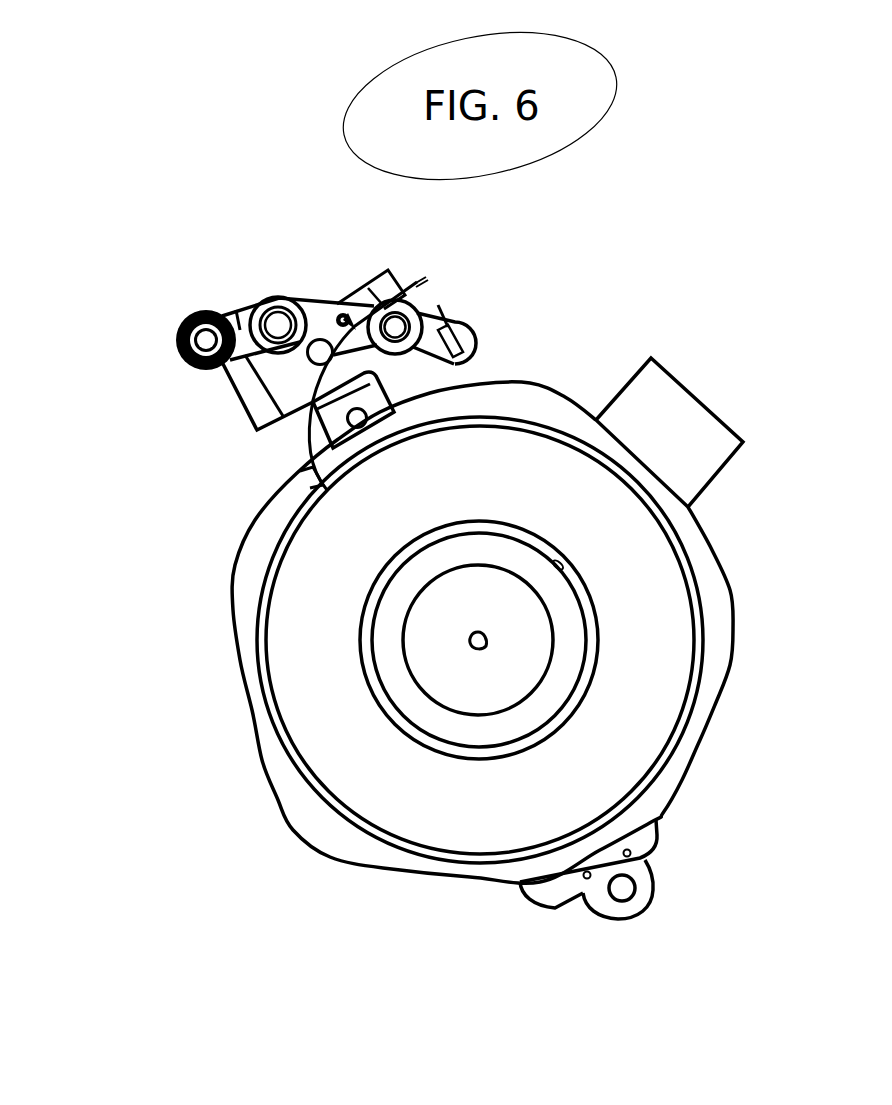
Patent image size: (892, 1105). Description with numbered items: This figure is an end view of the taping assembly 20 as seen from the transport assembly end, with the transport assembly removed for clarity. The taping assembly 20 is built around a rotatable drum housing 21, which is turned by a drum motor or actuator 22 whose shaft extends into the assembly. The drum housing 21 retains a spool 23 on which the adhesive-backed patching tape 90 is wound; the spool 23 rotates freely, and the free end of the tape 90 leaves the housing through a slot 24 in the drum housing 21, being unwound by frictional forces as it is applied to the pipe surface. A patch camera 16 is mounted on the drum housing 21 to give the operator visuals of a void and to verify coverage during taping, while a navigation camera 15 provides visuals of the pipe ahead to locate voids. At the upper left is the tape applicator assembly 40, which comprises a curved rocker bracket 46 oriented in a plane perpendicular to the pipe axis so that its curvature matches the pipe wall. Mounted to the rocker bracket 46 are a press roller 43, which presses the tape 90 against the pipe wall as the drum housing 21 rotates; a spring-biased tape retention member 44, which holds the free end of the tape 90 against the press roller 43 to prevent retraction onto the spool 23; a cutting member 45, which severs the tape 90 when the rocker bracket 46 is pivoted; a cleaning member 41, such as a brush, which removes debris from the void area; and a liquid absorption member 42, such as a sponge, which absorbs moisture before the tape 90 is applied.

The navigation camera 15 is at (625, 905).
The patch camera 16 is at (690, 422).
The taping assembly 20 is at (340, 912).
The drum housing 21 is at (262, 762).
The drum motor or actuator 22 is at (520, 617).
The spool 23 is at (573, 637).
The slot 24 is at (297, 473).
The tape applicator assembly 40 is at (180, 410).
The cleaning member 41 is at (176, 338).
The liquid absorption member 42 is at (263, 298).
The press roller 43 is at (405, 365).
The tape retention member 44 is at (323, 317).
The cutting member 45 is at (445, 308).
The rocker bracket 46 is at (240, 305).
The patching tape 90 is at (638, 700).